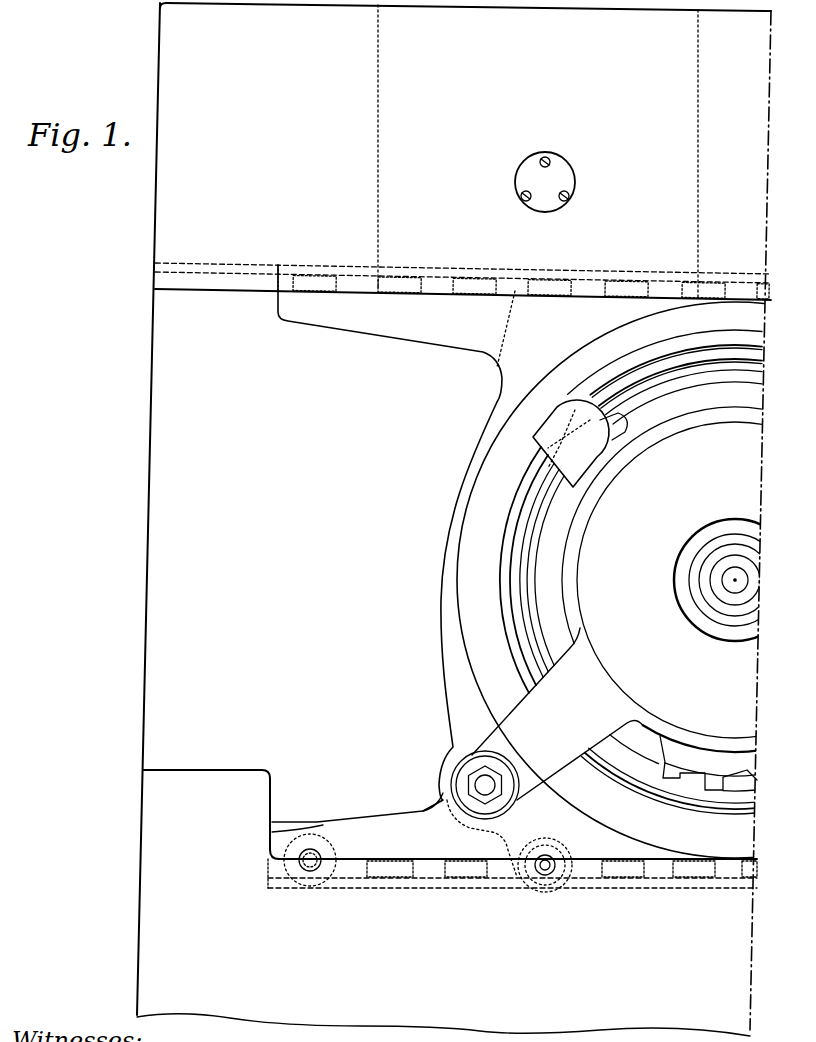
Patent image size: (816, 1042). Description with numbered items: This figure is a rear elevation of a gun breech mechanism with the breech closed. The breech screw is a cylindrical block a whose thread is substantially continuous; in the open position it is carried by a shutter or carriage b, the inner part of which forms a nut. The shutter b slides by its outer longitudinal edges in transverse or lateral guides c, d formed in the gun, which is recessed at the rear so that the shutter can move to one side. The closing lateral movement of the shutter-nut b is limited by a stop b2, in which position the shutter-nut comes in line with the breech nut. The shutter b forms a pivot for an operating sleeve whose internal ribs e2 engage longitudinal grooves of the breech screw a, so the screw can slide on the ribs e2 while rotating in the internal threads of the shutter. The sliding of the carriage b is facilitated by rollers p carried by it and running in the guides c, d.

The cylindrical block a is at (615, 580).
The shutter or carriage b is at (470, 697).
The stop b2 is at (248, 790).
The lateral guide c is at (243, 292).
The lateral guide d is at (353, 868).
The internal ribs e2 is at (695, 780).
The rollers p is at (316, 291).